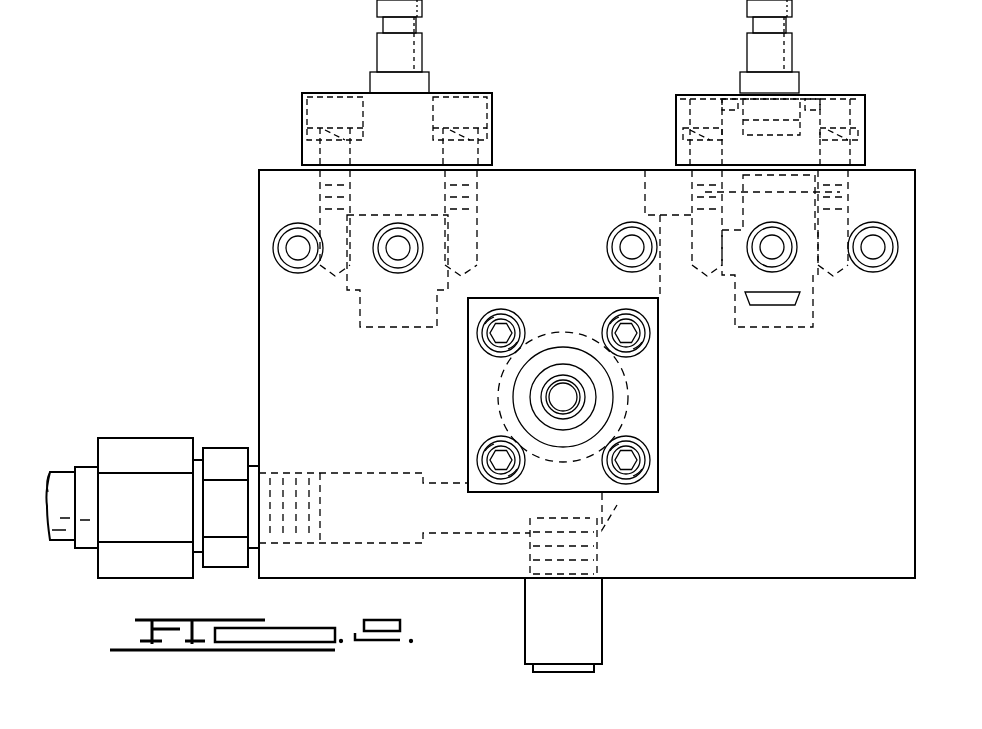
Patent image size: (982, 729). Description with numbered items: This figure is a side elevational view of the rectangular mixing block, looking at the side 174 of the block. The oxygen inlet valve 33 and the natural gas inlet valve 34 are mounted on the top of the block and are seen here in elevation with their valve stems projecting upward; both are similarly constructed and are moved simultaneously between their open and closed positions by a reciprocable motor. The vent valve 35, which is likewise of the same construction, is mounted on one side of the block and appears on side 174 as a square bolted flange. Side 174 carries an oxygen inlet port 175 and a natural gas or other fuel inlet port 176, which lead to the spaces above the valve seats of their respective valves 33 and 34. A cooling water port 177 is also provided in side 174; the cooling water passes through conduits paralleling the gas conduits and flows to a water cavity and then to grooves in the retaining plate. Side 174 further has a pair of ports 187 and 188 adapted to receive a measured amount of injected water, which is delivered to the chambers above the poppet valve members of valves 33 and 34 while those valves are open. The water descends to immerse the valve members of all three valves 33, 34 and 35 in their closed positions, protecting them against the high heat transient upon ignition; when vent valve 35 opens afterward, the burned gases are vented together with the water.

The oxygen inlet valve 33 is at (298, 122).
The natural gas inlet valve 34 is at (674, 98).
The vent valve 35 is at (662, 396).
The side of the mixing block 174 is at (395, 388).
The oxygen inlet port 175 is at (410, 244).
The natural gas inlet port 176 is at (782, 239).
The cooling water port 177 is at (632, 237).
The water injection port 187 is at (283, 251).
The water injection port 188 is at (873, 255).